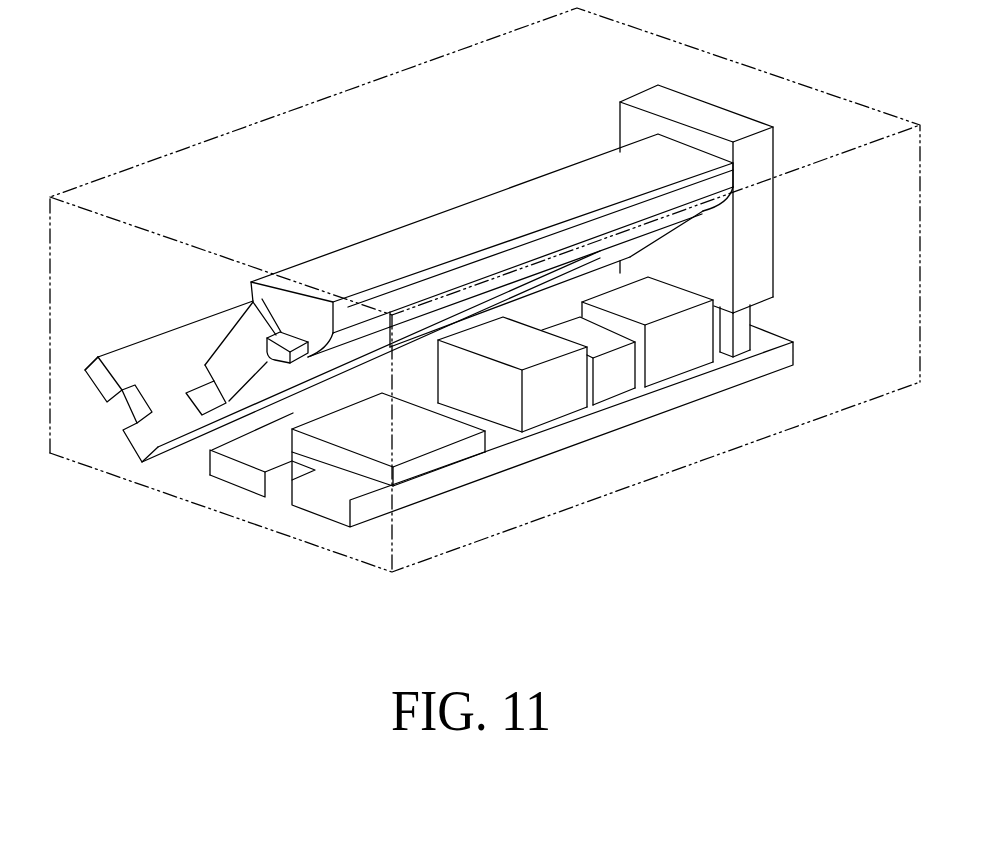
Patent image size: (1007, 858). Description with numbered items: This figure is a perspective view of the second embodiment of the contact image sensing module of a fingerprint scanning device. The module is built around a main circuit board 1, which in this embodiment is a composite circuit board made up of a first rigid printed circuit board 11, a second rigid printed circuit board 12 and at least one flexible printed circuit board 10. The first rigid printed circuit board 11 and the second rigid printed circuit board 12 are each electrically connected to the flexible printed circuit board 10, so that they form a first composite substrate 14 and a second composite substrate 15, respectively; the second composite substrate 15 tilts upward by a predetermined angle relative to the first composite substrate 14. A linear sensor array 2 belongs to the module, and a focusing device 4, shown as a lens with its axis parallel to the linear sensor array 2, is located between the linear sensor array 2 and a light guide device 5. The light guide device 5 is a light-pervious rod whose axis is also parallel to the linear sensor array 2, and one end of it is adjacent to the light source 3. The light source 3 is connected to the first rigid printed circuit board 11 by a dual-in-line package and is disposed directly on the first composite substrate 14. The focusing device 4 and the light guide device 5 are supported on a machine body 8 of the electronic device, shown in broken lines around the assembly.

The main circuit board 1 is at (717, 430).
The linear sensor array 2 is at (197, 380).
The light source 3 is at (715, 242).
The focusing device 4 is at (243, 347).
The light guide device 5 is at (428, 240).
The machine body 8 is at (270, 530).
The flexible printed circuit board 10 is at (293, 413).
The first rigid printed circuit board 11 is at (333, 478).
The second rigid printed circuit board 12 is at (136, 360).
The first composite substrate 14 is at (405, 511).
The second composite substrate 15 is at (105, 347).